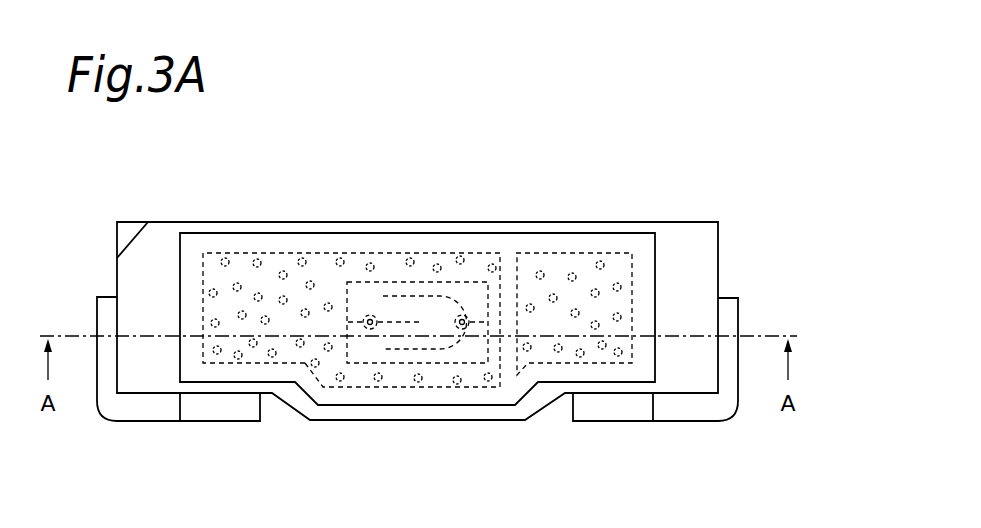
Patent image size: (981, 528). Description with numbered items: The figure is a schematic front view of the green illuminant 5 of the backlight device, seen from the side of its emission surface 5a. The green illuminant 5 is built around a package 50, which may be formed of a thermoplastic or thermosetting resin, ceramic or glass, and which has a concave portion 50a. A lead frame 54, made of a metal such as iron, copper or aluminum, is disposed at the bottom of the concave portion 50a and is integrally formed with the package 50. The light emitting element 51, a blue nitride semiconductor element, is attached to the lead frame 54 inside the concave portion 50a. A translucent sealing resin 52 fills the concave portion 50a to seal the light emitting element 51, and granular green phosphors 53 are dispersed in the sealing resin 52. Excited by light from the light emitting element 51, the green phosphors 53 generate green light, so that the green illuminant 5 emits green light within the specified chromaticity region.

The green illuminant 5 is at (690, 200).
The emission surface 5a is at (223, 300).
The package 50 is at (702, 260).
The concave portion 50a is at (655, 280).
The light emitting element 51 is at (354, 280).
The sealing resin 52 is at (217, 277).
The green phosphors 53 is at (572, 278).
The lead frame 54 is at (330, 387).